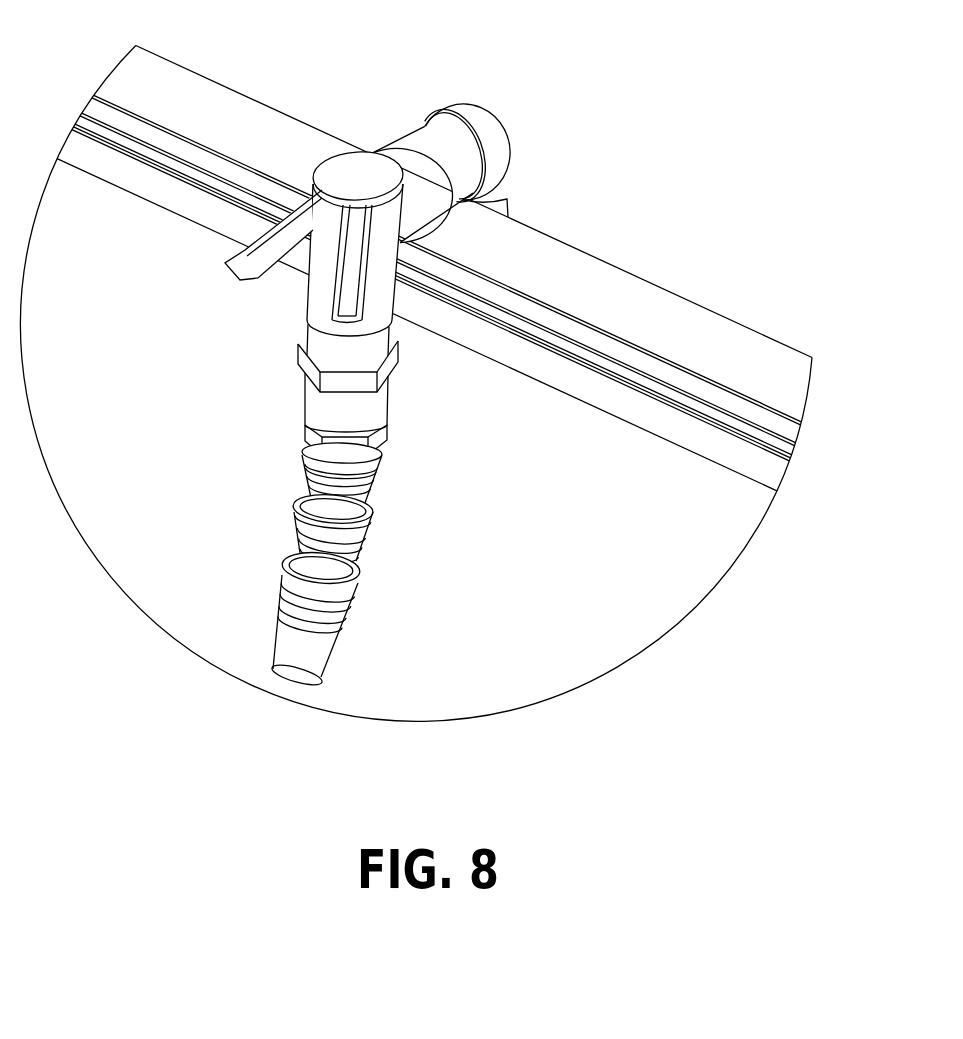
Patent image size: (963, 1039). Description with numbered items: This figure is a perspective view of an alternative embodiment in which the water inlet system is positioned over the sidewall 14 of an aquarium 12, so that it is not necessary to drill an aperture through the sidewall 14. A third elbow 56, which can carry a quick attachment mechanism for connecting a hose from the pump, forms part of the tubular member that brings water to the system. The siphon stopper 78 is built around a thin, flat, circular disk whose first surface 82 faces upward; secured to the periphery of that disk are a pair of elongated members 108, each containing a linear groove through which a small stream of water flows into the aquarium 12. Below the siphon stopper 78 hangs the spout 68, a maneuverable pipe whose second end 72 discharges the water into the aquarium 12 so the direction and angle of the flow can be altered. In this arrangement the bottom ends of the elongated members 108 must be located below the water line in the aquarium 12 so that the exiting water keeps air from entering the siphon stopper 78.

The aquarium 12 is at (755, 283).
The sidewall 14 is at (625, 271).
The third elbow 56 is at (493, 113).
The spout 68 is at (404, 492).
The second end 72 is at (323, 663).
The siphon stopper 78 is at (346, 362).
The first surface 82 is at (346, 150).
The elongated member 108 is at (245, 257).